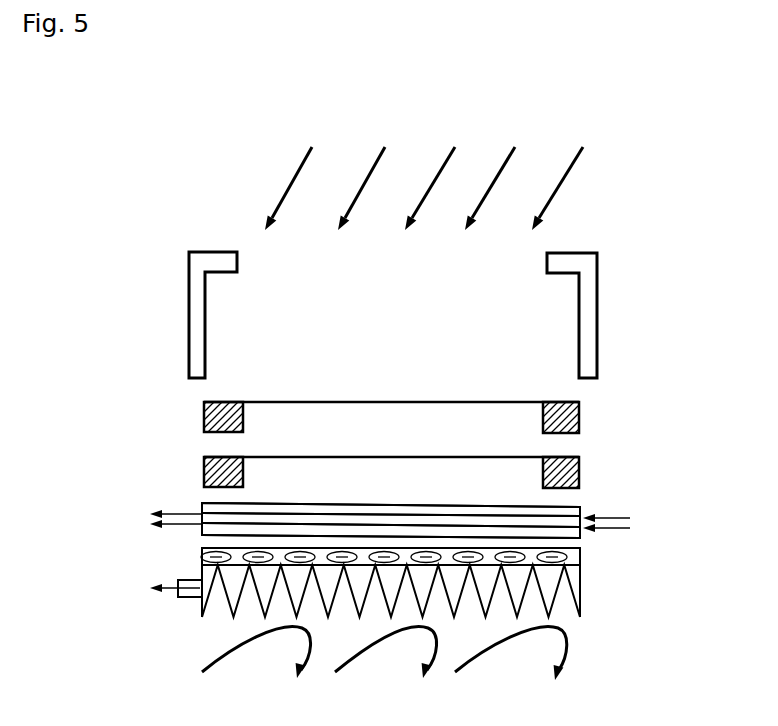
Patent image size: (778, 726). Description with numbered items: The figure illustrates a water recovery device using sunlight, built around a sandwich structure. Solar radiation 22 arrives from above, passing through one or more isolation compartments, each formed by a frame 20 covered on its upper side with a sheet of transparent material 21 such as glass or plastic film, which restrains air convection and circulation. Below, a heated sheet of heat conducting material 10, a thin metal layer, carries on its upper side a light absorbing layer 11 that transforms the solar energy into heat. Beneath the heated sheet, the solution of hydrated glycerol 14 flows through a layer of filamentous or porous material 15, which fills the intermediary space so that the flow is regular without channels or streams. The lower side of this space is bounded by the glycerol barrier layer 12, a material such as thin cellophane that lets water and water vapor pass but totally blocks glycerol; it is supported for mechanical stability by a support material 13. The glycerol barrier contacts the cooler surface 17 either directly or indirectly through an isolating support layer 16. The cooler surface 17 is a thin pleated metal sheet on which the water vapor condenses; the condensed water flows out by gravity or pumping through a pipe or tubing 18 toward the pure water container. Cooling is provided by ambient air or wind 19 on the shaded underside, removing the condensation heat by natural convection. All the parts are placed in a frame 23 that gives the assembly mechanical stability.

The heat conducting material 10 is at (553, 522).
The light absorbing layer 11 is at (367, 498).
The glycerol barrier layer 12 is at (565, 533).
The support material 13 is at (555, 537).
The hydrated glycerol solution 14 is at (624, 522).
The filamentous or porous material 15 is at (572, 507).
The isolating support layer 16 is at (557, 557).
The cooler surface 17 is at (573, 593).
The pipe or tubing 18 is at (200, 598).
The ambient air or wind 19 is at (384, 657).
The frame 20 is at (580, 457).
The sheet of transparent material 21 is at (395, 402).
The solar radiation 22 is at (424, 168).
The frame 23 is at (562, 262).